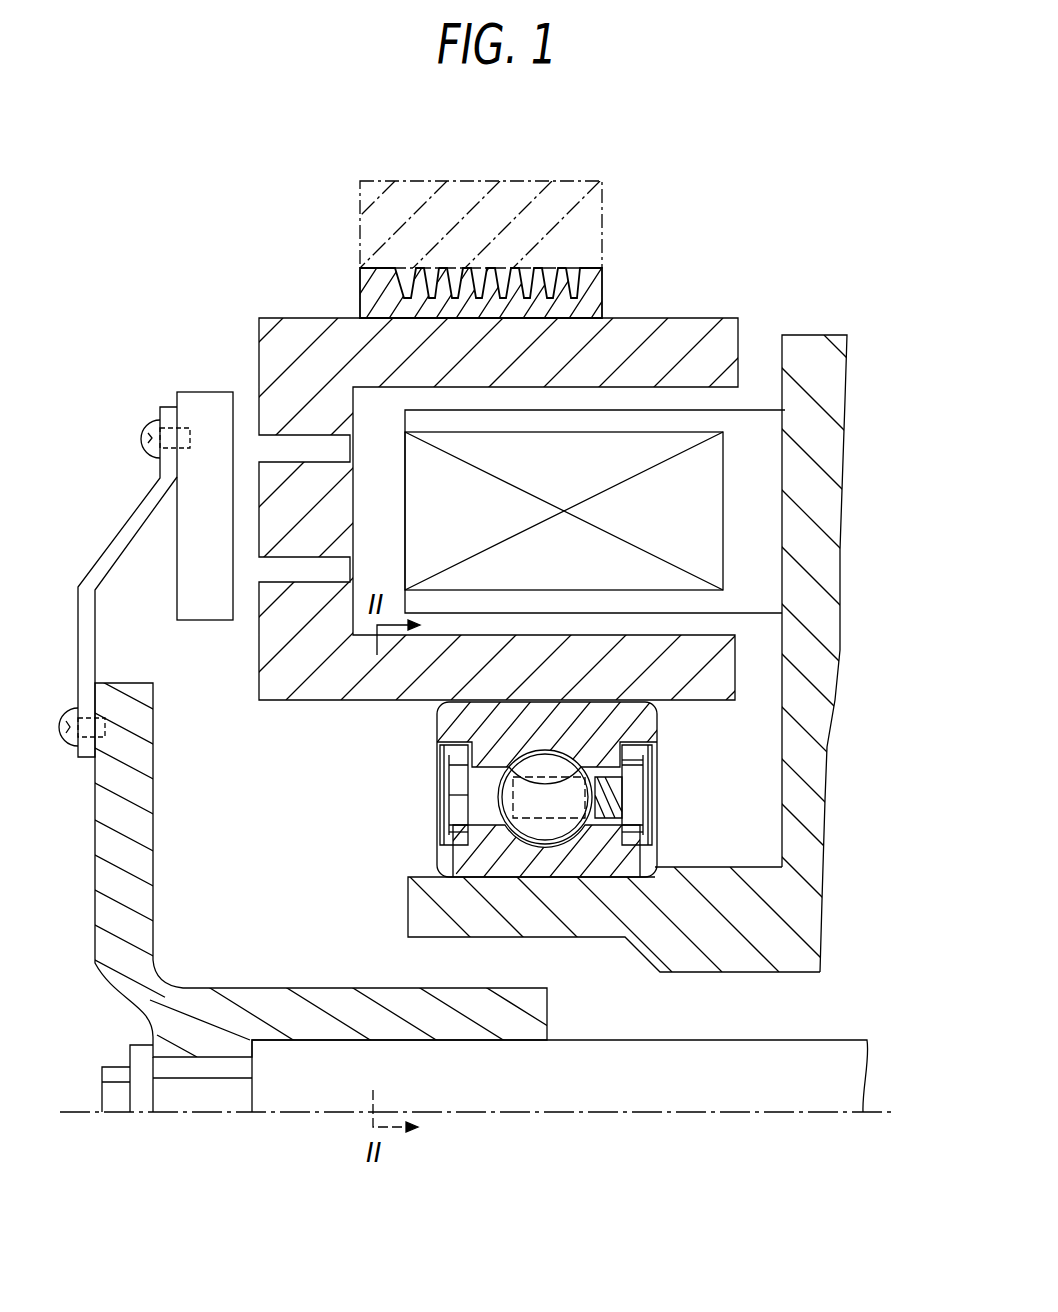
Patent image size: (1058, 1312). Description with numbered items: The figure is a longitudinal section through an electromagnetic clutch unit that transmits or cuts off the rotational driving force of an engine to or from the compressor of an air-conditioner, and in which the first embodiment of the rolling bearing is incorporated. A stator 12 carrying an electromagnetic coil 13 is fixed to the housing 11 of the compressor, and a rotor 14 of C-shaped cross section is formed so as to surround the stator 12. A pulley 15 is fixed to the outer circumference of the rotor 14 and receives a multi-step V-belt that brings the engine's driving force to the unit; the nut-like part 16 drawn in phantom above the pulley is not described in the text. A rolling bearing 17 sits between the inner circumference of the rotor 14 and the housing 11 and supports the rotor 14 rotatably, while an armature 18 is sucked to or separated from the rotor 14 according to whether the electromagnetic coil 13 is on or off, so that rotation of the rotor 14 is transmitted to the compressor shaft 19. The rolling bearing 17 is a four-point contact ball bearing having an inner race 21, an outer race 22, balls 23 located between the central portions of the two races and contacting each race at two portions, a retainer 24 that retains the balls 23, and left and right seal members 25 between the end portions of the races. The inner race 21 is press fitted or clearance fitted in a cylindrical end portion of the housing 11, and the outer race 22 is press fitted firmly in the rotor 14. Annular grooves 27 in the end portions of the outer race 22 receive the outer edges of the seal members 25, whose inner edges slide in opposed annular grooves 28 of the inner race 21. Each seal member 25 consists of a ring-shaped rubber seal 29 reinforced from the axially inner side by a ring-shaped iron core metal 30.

The housing 11 is at (820, 822).
The stator 12 is at (763, 600).
The electromagnetic coil 13 is at (720, 432).
The rotor 14 is at (683, 325).
The pulley 15 is at (604, 283).
The nut 16 is at (604, 205).
The rolling bearing 17 is at (533, 791).
The armature 18 is at (203, 622).
The compressor shaft 19 is at (800, 1040).
The inner race 21 is at (590, 880).
The outer race 22 is at (645, 723).
The balls 23 is at (531, 826).
The retainer 24 is at (645, 793).
The seal members 25 is at (438, 762).
The annular grooves 27 is at (645, 758).
The annular grooves 28 is at (650, 835).
The rubber seal 29 is at (440, 828).
The core metal 30 is at (440, 793).